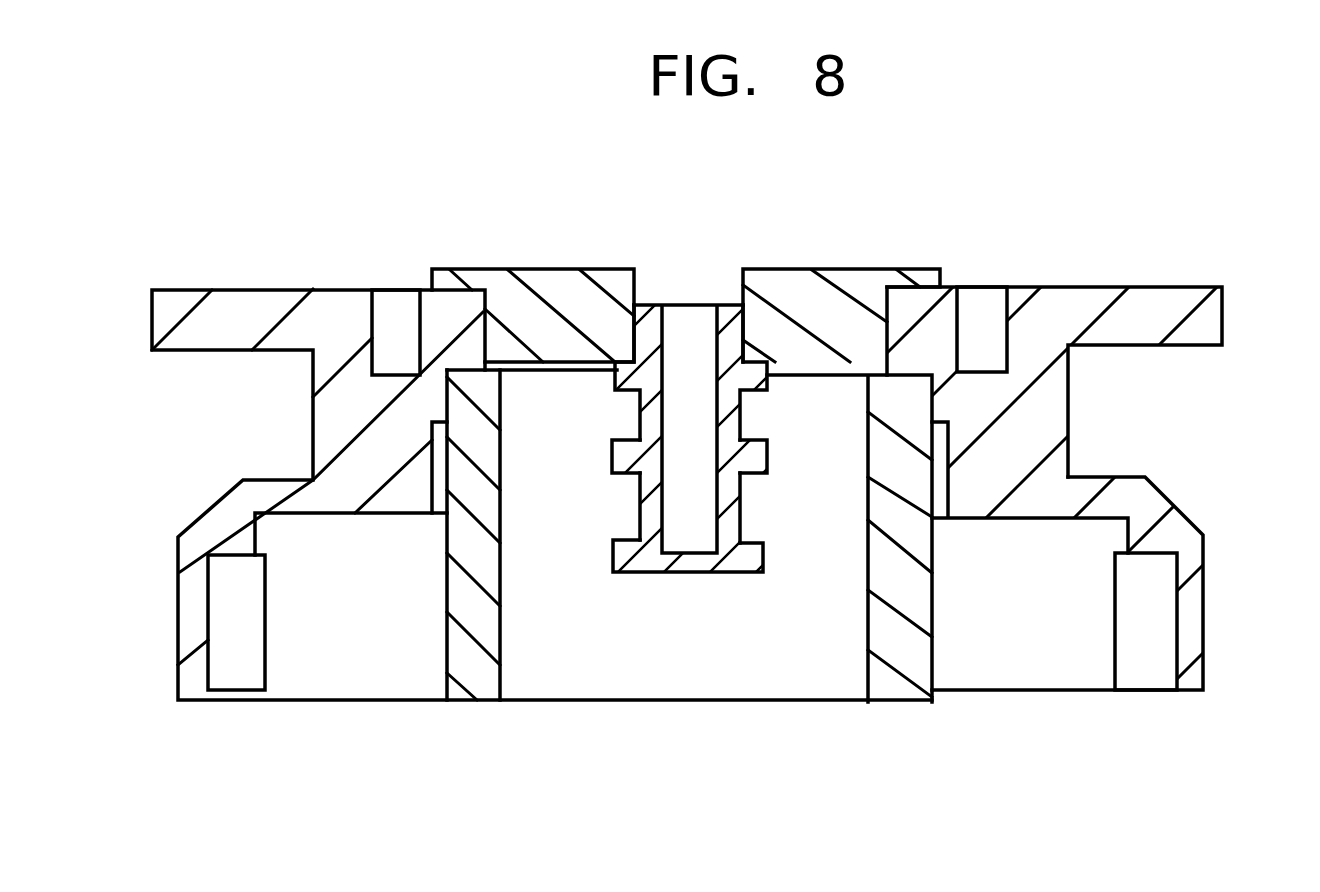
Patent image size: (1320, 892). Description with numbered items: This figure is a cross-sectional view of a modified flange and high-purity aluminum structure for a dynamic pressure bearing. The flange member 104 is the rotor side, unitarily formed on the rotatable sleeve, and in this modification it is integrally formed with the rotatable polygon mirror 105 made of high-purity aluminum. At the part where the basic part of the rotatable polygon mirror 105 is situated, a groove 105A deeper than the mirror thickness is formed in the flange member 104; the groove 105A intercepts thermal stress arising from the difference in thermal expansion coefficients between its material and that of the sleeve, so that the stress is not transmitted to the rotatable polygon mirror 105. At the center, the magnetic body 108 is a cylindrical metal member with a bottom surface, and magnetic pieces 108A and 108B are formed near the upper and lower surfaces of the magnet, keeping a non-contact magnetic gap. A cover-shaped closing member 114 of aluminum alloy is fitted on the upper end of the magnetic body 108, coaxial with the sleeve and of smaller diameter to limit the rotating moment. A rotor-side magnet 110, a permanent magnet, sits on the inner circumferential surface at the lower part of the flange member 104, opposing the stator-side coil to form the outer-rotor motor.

The flange member 104 is at (1060, 424).
The rotatable polygon mirror 105 is at (1210, 322).
The groove 105A is at (980, 313).
The magnetic body 108 is at (692, 322).
The magnetic piece 108A is at (615, 475).
The magnetic piece 108B is at (763, 568).
The rotor-side magnet 110 is at (1143, 672).
The closing member 114 is at (807, 292).